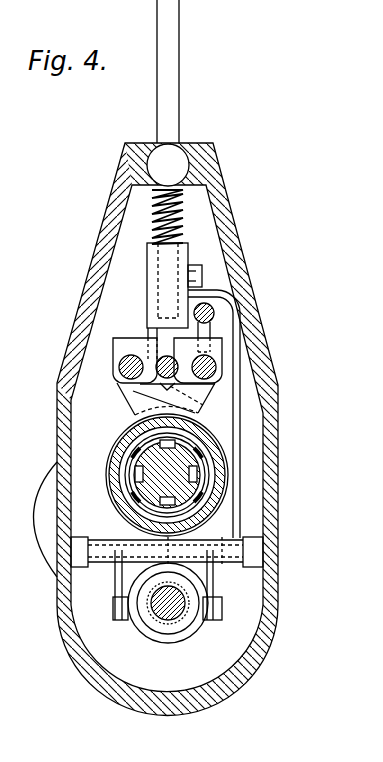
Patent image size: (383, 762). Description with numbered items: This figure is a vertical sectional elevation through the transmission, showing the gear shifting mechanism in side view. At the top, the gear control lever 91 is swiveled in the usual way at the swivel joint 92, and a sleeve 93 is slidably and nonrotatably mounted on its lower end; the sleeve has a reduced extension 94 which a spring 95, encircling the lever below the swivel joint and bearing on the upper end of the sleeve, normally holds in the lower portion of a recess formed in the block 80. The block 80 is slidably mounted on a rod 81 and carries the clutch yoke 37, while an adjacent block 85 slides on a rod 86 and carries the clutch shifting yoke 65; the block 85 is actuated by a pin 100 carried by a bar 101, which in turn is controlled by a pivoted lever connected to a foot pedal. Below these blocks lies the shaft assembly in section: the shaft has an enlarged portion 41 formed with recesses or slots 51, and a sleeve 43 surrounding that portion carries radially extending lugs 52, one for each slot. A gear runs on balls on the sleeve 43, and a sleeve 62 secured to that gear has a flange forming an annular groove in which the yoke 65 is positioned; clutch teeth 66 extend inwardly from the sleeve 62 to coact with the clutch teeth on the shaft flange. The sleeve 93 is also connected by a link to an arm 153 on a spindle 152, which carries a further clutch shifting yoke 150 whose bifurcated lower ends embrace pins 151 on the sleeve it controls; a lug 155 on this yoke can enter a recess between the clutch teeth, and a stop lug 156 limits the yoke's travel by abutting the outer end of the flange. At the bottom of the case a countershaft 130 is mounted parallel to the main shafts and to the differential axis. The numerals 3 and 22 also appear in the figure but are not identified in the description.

The housing 3 is at (28, 519).
The casing wall 22 is at (278, 488).
The clutch yoke 37 is at (137, 402).
The enlarged portion 41 is at (210, 462).
The sleeve 43 is at (200, 442).
The recesses or slots 51 is at (183, 437).
The radially extending lugs 52 is at (197, 473).
The sleeve 62 is at (120, 457).
The clutch shifting yoke 65 is at (205, 390).
The clutch teeth 66 is at (122, 488).
The block 80 is at (125, 345).
The rod 81 is at (120, 361).
The block 85 is at (222, 350).
The rod 86 is at (217, 368).
The gear control lever 91 is at (176, 66).
The swivel joint 92 is at (172, 165).
The sleeve 93 is at (188, 250).
The reduced extension 94 is at (145, 322).
The spring 95 is at (182, 210).
The pin 100 is at (212, 320).
The bar 101 is at (240, 298).
The countershaft 130 is at (162, 608).
The clutch shifting yoke 150 is at (216, 590).
The pins 151 is at (215, 622).
The spindle 152 is at (109, 568).
The arm 153 is at (225, 560).
The lug 155 is at (166, 549).
The stop lug 156 is at (134, 527).